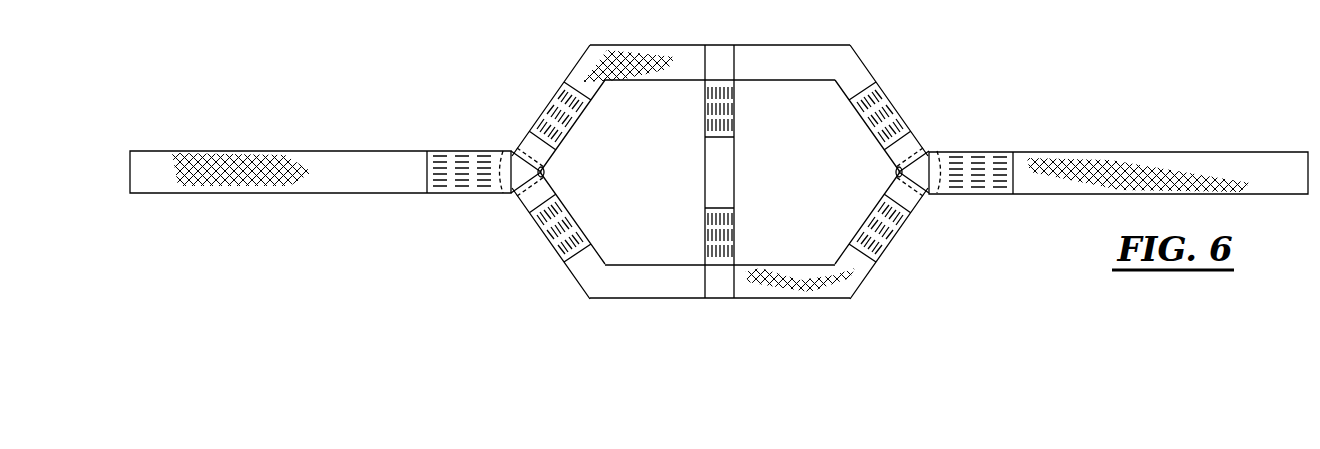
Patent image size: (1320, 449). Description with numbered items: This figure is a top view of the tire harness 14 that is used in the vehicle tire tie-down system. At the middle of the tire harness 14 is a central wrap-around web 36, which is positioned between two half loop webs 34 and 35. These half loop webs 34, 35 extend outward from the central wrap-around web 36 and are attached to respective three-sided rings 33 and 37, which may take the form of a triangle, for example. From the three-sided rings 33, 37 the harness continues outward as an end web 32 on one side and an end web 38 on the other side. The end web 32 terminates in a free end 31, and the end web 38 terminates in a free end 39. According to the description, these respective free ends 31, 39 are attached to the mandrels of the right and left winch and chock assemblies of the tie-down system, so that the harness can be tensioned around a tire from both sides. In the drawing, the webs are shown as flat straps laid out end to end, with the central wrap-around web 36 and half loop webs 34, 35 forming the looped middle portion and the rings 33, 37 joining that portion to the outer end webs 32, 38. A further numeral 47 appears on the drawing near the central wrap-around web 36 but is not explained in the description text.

The tire harness 14 is at (868, 60).
The free end 31 is at (1300, 172).
The end web 32 is at (1122, 176).
The three-sided ring 33 is at (928, 152).
The half loop web 34 is at (859, 79).
The half loop web 35 is at (851, 273).
The central wrap-around web 36 is at (720, 170).
The three-sided ring 37 is at (515, 196).
The end web 38 is at (325, 168).
The free end 39 is at (137, 172).
The central band hinge 47 is at (714, 65).